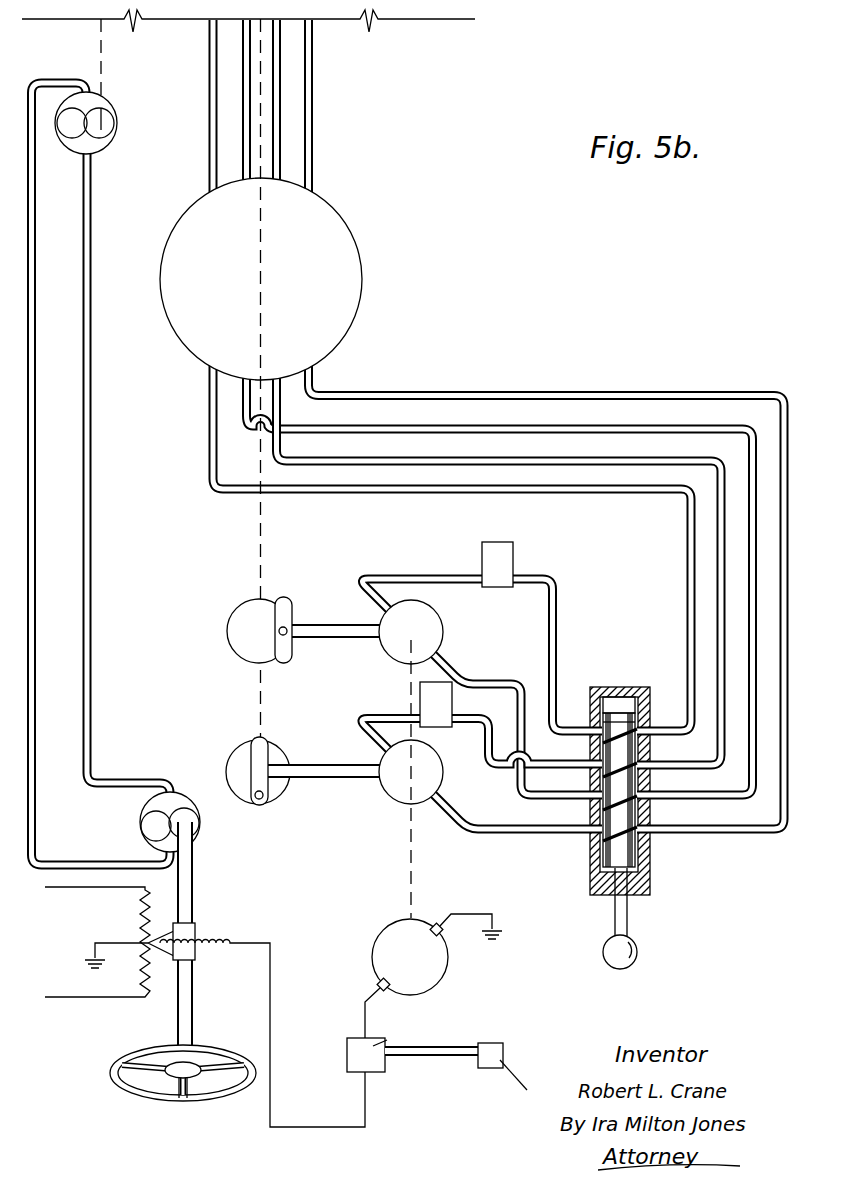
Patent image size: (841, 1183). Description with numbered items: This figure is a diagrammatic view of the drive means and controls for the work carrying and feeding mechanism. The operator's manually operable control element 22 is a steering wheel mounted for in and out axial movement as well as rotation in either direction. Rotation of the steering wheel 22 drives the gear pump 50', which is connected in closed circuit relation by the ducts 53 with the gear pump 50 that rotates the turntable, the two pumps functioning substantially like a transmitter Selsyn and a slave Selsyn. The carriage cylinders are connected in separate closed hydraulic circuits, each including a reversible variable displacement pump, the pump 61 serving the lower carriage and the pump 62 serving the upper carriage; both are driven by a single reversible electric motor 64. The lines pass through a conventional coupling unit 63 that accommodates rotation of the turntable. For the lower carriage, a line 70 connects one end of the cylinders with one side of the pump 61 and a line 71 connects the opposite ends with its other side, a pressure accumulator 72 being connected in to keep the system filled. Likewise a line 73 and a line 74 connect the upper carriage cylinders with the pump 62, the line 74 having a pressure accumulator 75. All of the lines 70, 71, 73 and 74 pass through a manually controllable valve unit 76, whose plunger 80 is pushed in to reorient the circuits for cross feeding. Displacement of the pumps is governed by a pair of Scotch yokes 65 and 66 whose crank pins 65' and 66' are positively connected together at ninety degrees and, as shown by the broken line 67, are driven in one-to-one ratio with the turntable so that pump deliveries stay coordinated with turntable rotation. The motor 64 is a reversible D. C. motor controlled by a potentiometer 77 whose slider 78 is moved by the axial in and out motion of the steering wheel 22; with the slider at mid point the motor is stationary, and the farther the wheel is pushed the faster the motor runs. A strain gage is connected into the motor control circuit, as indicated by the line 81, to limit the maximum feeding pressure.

The control element 22 is at (205, 1045).
The motor 50 is at (100, 126).
The second gear pump 50' is at (152, 822).
The ducts 53 is at (82, 559).
The pump 61 is at (394, 789).
The pump 62 is at (443, 630).
The coupling unit 63 is at (350, 241).
The reversible electric motor 64 is at (393, 924).
The Scotch yoke 65 is at (304, 757).
The crank pin 65' is at (278, 810).
The Scotch yoke 66 is at (304, 612).
The crank pin 66' is at (307, 613).
The broken line 67 is at (263, 163).
The line 70 is at (314, 72).
The line 71 is at (278, 108).
The pressure accumulator 72 is at (420, 697).
The line 73 is at (244, 104).
The line 74 is at (211, 61).
The pressure accumulator 75 is at (513, 556).
The valve unit 76 is at (622, 686).
The potentiometer 77 is at (142, 926).
The slider 78 is at (170, 935).
The plunger 80 is at (640, 856).
The line 81 is at (405, 1057).